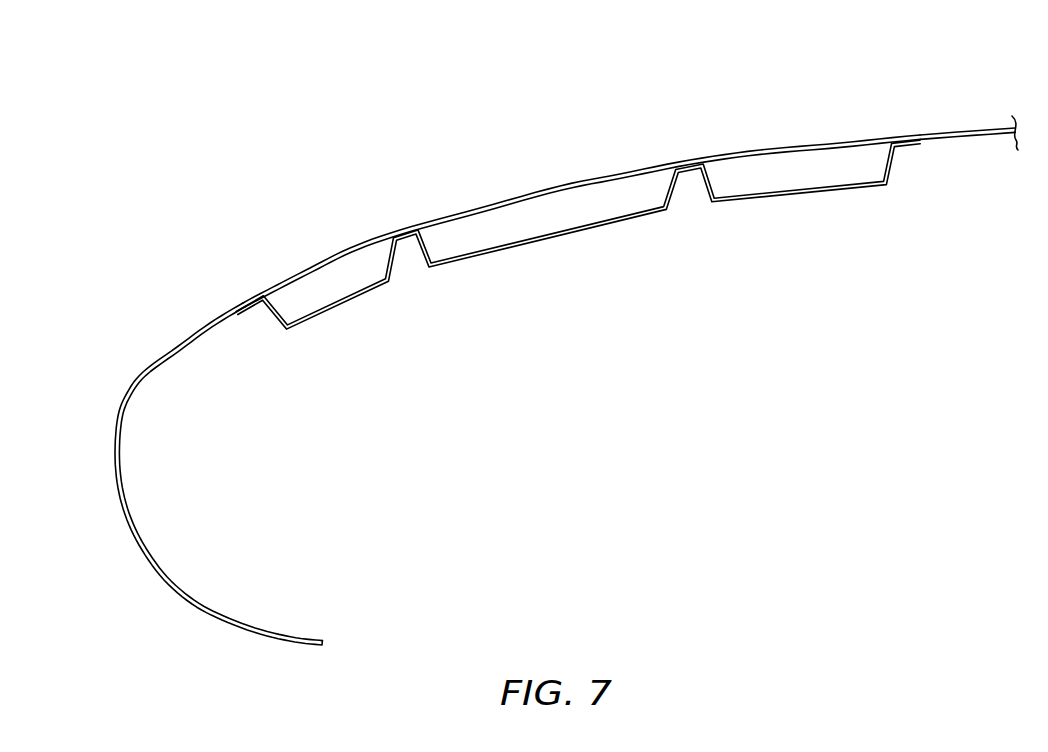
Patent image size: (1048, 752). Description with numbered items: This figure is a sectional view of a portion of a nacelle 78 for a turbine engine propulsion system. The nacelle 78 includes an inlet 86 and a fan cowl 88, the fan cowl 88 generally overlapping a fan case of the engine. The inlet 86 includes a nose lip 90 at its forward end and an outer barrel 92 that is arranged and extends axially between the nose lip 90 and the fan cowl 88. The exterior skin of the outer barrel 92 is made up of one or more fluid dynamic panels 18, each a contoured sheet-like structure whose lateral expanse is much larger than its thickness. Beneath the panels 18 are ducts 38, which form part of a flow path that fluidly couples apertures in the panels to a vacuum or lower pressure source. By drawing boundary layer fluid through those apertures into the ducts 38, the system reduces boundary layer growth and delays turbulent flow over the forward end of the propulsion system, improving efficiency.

The nacelle 78 is at (293, 98).
The inlet 86 is at (273, 232).
The fan cowl 88 is at (962, 129).
The nose lip 90 is at (142, 373).
The outer barrel 92 is at (604, 170).
The fluid dynamic panel 18 is at (335, 256).
The duct 38 is at (337, 298).